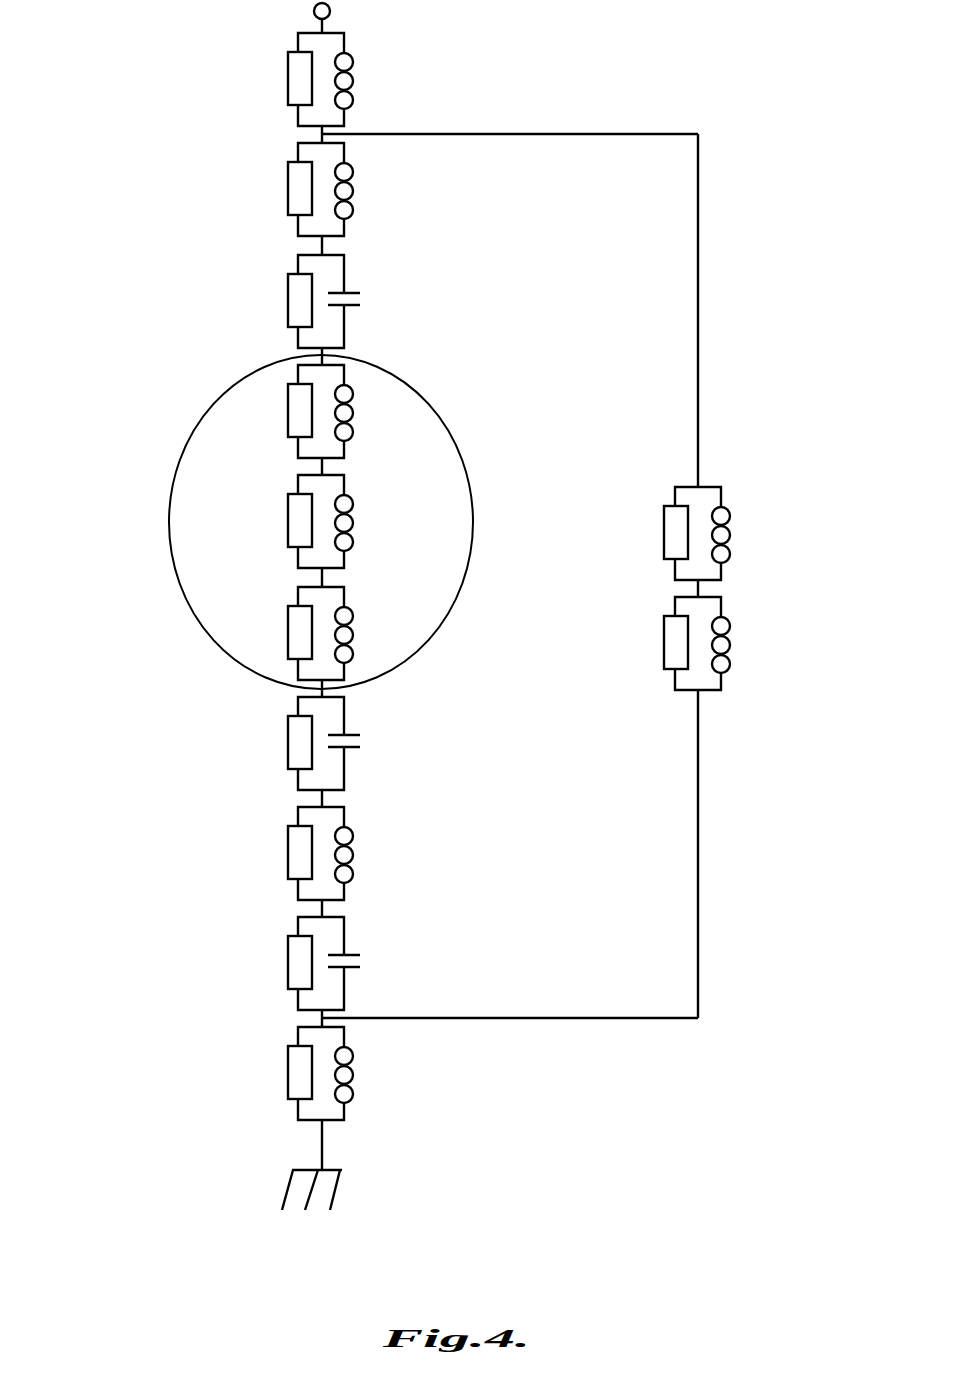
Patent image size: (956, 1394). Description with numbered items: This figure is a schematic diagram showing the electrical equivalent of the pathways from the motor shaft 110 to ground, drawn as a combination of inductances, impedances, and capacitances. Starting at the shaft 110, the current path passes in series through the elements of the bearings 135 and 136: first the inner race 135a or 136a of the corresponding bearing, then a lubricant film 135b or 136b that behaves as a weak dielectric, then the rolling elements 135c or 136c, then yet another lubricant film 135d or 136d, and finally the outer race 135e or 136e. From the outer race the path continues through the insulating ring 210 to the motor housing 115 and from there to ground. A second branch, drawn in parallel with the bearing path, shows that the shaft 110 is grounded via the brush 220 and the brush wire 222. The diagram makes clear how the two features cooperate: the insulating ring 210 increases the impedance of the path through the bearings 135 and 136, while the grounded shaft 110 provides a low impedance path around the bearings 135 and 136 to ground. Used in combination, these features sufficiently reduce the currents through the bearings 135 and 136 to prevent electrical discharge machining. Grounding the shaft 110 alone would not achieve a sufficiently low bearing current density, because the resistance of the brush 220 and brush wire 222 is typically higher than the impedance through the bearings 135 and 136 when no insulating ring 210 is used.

The shaft 110 is at (383, 82).
The motor housing 115 is at (382, 1078).
The bearing 135 is at (301, 524).
The bearing 136 is at (162, 147).
The inner race 135a is at (413, 189).
The inner race 136a is at (383, 193).
The lubricant film 135b is at (413, 301).
The lubricant film 136b is at (382, 302).
The rolling elements 135c is at (371, 522).
The rolling elements 136c is at (382, 413).
The lubricant film 135d is at (413, 743).
The lubricant film 136d is at (382, 745).
The outer race 135e is at (412, 853).
The outer race 136e is at (382, 857).
The insulating ring 210 is at (382, 962).
The brush 220 is at (760, 538).
The brush wire 222 is at (760, 645).